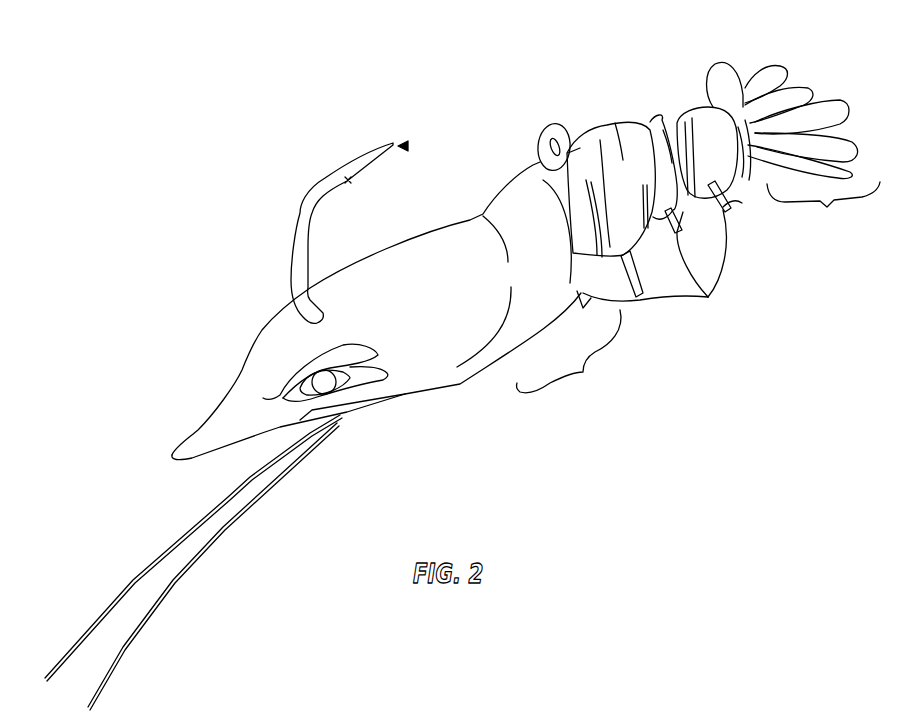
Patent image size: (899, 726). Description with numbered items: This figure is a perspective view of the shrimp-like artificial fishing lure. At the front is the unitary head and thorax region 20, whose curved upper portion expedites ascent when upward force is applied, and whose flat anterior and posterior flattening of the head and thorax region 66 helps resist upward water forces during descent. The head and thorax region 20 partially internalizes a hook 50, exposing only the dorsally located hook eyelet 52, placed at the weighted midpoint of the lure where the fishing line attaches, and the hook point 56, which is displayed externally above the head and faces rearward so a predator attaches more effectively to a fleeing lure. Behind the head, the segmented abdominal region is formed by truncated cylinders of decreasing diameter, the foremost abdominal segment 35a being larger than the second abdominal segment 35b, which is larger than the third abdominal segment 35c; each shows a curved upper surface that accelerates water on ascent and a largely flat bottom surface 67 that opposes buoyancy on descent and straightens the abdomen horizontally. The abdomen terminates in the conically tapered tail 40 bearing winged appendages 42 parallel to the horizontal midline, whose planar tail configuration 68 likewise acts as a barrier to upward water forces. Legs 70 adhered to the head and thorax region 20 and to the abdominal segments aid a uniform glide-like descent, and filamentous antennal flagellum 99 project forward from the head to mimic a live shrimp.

The unitary head and thorax region 20 is at (452, 323).
The hook 50 is at (297, 253).
The hook eyelet 52 is at (553, 122).
The hook point 56 is at (402, 146).
The foremost abdominal segment 35a is at (603, 127).
The second abdominal segment 35b is at (657, 133).
The third abdominal segment 35c is at (710, 137).
The conically tapered tail 40 is at (740, 120).
The winged appendages 42 is at (877, 143).
The planar tail configuration 68 is at (823, 214).
The flat bottom surface of abdominal segment 67 is at (630, 242).
The legs 70 is at (708, 297).
The flattening of the head and thorax region 66 is at (568, 351).
The antennal flagellum 99 is at (127, 600).